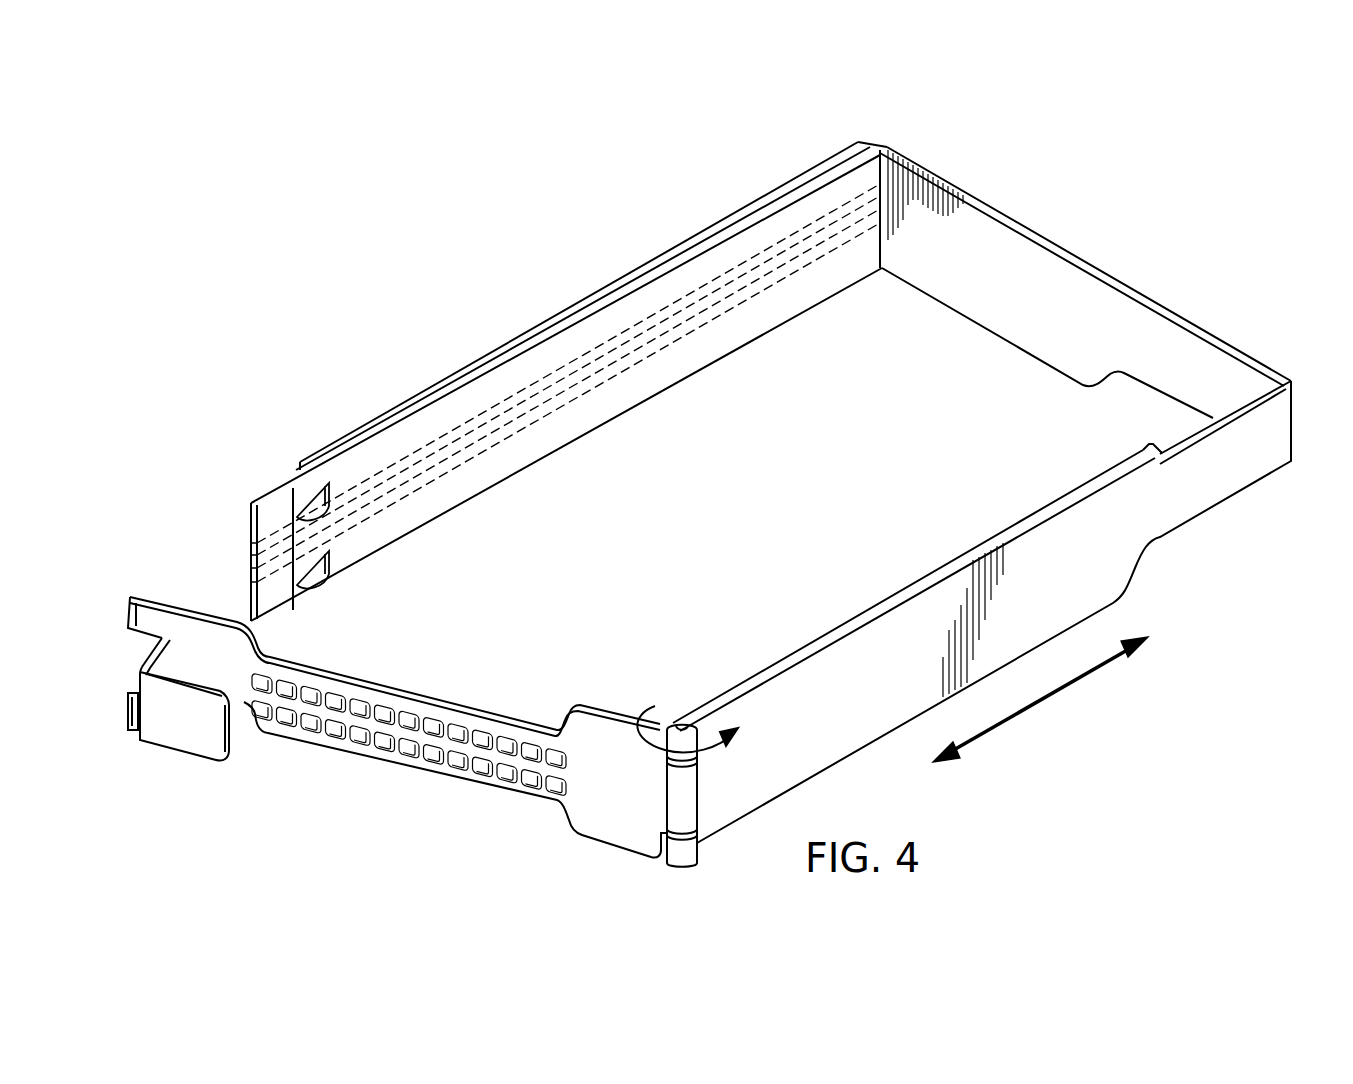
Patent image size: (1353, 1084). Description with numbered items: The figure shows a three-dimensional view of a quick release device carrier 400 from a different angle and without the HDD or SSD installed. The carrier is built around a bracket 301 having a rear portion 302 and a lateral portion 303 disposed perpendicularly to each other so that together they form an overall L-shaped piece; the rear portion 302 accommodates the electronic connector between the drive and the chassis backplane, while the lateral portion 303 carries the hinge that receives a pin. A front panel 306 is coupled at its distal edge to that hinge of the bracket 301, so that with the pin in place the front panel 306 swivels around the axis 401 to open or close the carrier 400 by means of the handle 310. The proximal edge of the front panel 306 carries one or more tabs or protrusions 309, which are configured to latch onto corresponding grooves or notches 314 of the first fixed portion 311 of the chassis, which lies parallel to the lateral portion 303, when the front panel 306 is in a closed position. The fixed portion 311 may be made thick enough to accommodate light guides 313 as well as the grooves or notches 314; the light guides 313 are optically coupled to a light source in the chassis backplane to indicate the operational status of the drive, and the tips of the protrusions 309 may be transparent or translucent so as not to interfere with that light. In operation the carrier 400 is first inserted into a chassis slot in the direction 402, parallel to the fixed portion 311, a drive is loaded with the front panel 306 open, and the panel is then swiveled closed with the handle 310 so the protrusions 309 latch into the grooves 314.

The carrier 400 is at (272, 145).
The bracket 301 is at (1291, 380).
The rear portion 302 is at (1103, 270).
The lateral portion 303 is at (898, 586).
The front panel 306 is at (418, 692).
The tabs or protrusions 309 is at (128, 608).
The handle 310 is at (180, 755).
The first fixed portion 311 is at (578, 300).
The light guides 313 is at (252, 546).
The grooves or notches 314 is at (300, 486).
The axis 401 is at (648, 736).
The direction 402 is at (1040, 702).